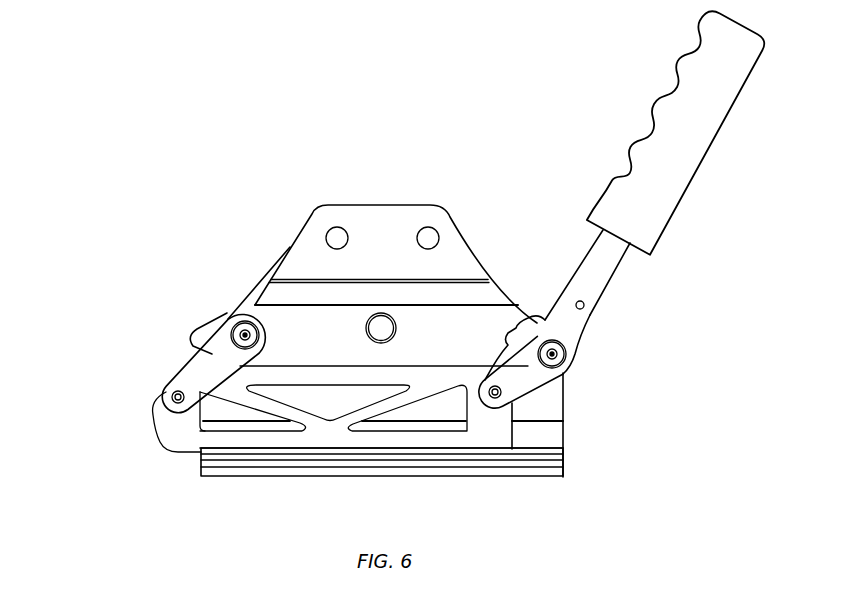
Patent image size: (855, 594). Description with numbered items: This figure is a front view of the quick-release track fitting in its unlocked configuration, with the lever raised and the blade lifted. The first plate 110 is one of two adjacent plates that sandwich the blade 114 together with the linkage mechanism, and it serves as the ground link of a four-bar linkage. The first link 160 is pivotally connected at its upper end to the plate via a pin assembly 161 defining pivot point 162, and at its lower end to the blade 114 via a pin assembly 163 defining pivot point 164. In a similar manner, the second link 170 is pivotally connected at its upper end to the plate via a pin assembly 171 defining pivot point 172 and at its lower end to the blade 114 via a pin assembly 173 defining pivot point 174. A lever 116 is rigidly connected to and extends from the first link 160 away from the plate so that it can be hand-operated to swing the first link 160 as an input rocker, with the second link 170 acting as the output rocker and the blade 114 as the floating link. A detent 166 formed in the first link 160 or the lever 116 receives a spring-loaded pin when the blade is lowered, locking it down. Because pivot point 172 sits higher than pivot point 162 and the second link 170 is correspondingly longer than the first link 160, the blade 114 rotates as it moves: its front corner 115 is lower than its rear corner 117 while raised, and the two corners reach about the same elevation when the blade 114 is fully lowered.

The first plate 110 is at (322, 235).
The blade 114 is at (165, 434).
The front corner 115 is at (168, 455).
The lever 116 is at (612, 270).
The rear corner 117 is at (477, 383).
The first link 160 is at (537, 377).
The pin assembly 161 is at (582, 297).
The pivot point 162 is at (562, 343).
The pin assembly 163 is at (503, 397).
The pivot point 164 is at (563, 423).
The detent 166 is at (538, 318).
The second link 170 is at (222, 357).
The pin assembly 171 is at (216, 342).
The pivot point 172 is at (240, 325).
The pin assembly 173 is at (169, 406).
The pivot point 174 is at (170, 394).